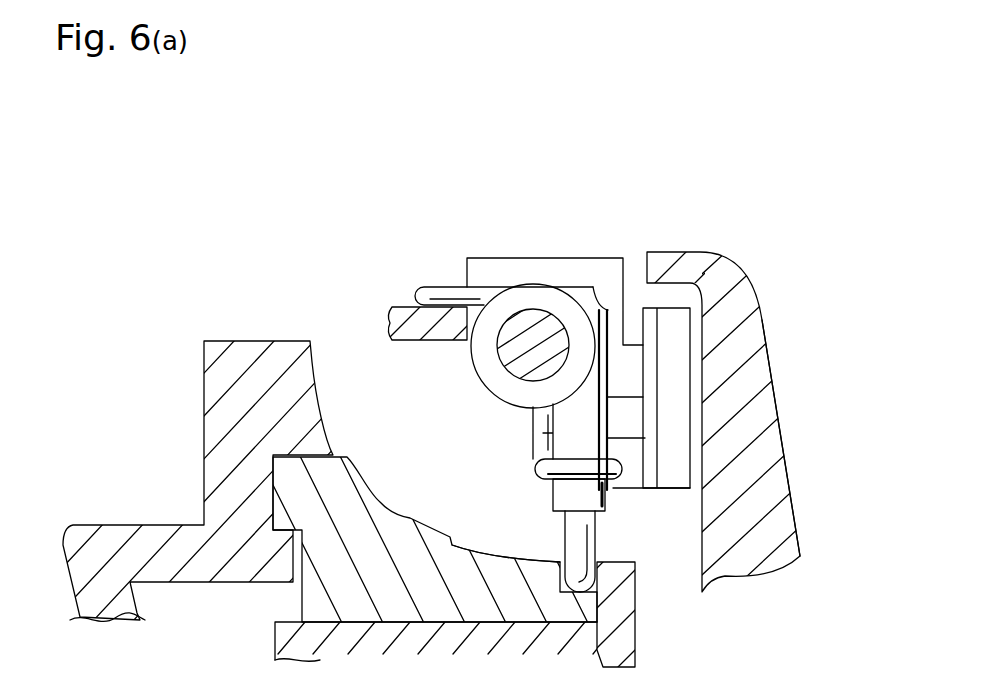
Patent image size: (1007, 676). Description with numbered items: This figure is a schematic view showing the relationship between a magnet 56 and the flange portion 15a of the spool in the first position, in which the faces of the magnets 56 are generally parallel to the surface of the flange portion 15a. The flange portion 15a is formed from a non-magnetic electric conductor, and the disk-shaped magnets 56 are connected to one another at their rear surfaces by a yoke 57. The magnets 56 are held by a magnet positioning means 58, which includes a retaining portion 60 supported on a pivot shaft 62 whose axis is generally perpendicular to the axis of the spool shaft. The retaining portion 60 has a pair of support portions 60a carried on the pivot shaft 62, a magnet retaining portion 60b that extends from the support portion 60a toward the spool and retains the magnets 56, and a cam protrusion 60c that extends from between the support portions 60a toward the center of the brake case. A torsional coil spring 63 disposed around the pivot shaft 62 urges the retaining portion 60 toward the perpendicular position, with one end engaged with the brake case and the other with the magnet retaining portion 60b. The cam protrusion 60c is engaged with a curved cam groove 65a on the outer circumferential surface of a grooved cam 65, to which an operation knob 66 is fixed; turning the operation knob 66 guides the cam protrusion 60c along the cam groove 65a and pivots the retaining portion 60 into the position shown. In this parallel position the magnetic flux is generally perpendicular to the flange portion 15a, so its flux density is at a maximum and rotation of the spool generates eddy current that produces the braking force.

The flange portion 15a is at (752, 412).
The magnet 56 is at (708, 300).
The yoke 57 is at (658, 307).
The magnet positioning means 58 is at (363, 350).
The retaining portion 60 is at (548, 433).
The support portion 60a is at (515, 305).
The magnet retaining portion 60b is at (585, 442).
The cam protrusion 60c is at (573, 543).
The pivot shaft 62 is at (540, 320).
The torsional coil spring 63 is at (430, 295).
The grooved cam 65 is at (355, 500).
The cam groove 65a is at (540, 557).
The operation knob 66 is at (243, 363).